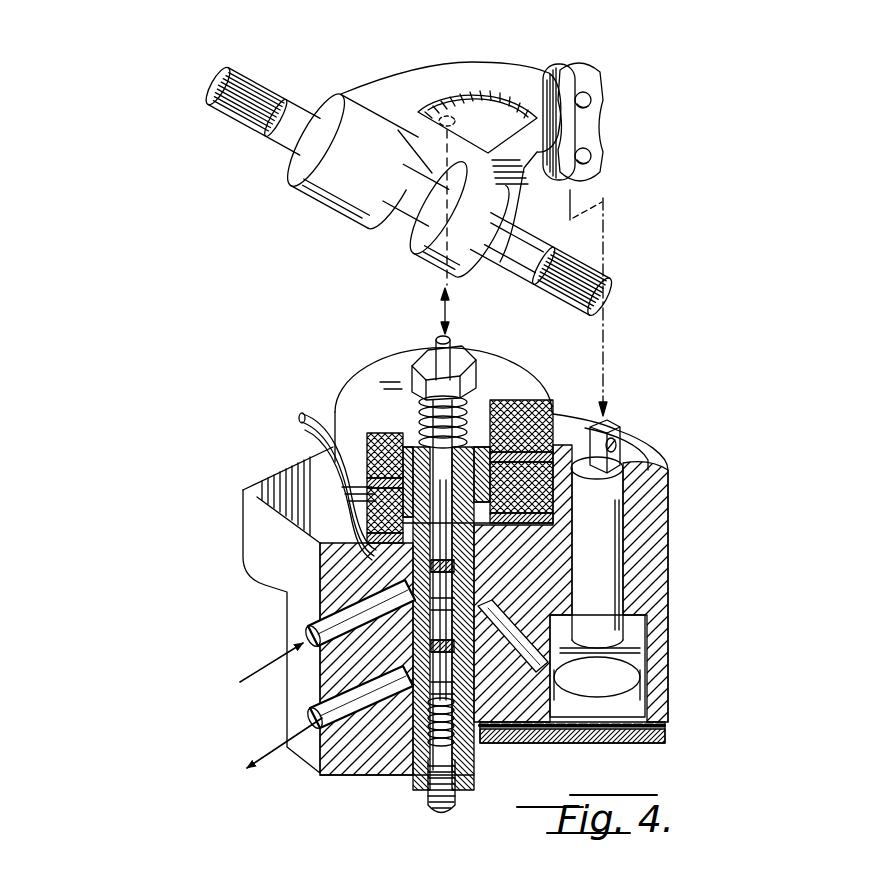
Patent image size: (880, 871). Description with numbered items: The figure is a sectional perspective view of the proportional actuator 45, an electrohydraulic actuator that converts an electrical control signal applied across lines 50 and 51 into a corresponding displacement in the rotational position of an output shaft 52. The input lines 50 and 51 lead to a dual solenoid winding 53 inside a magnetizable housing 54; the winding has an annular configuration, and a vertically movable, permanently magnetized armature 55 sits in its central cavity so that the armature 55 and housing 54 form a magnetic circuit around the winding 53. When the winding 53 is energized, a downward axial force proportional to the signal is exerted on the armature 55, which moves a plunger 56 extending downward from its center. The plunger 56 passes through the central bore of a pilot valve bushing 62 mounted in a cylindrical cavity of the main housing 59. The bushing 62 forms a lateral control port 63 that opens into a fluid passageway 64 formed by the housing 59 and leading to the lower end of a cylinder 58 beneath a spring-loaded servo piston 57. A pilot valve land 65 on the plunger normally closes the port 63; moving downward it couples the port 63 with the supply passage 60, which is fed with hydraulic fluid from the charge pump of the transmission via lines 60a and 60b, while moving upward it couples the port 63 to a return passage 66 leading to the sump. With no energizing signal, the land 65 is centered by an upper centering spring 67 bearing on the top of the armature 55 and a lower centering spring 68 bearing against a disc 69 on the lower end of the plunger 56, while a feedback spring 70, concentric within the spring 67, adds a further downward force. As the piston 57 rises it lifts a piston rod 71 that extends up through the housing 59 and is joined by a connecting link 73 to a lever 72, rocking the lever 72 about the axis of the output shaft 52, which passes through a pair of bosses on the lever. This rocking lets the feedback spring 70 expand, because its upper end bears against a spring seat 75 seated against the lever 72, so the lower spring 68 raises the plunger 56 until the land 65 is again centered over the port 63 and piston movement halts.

The proportional actuator 45 is at (227, 487).
The electrical input line 50 is at (313, 410).
The electrical input line 51 is at (303, 427).
The output shaft 52 is at (607, 298).
The dual solenoid winding 53 is at (553, 438).
The magnetizable housing 54 is at (347, 380).
The armature 55 is at (533, 400).
The plunger 56 is at (480, 530).
The servo piston 57 is at (640, 660).
The cylinder 58 is at (640, 697).
The main housing 59 is at (663, 556).
The passageway 60 is at (362, 612).
The line 60a is at (270, 663).
The line 60b is at (278, 753).
The pilot valve bushing 62 is at (478, 757).
The control port 63 is at (466, 600).
The fluid passageway 64 is at (527, 657).
The pilot valve land 65 is at (437, 623).
The return passage 66 is at (342, 712).
The upper centering spring 67 is at (488, 410).
The lower centering spring 68 is at (430, 760).
The disc 69 is at (410, 697).
The feedback spring 70 is at (417, 420).
The piston rod 71 is at (613, 500).
The lever 72 is at (497, 88).
The connecting link 73 is at (592, 138).
The spring seat 75 is at (430, 397).